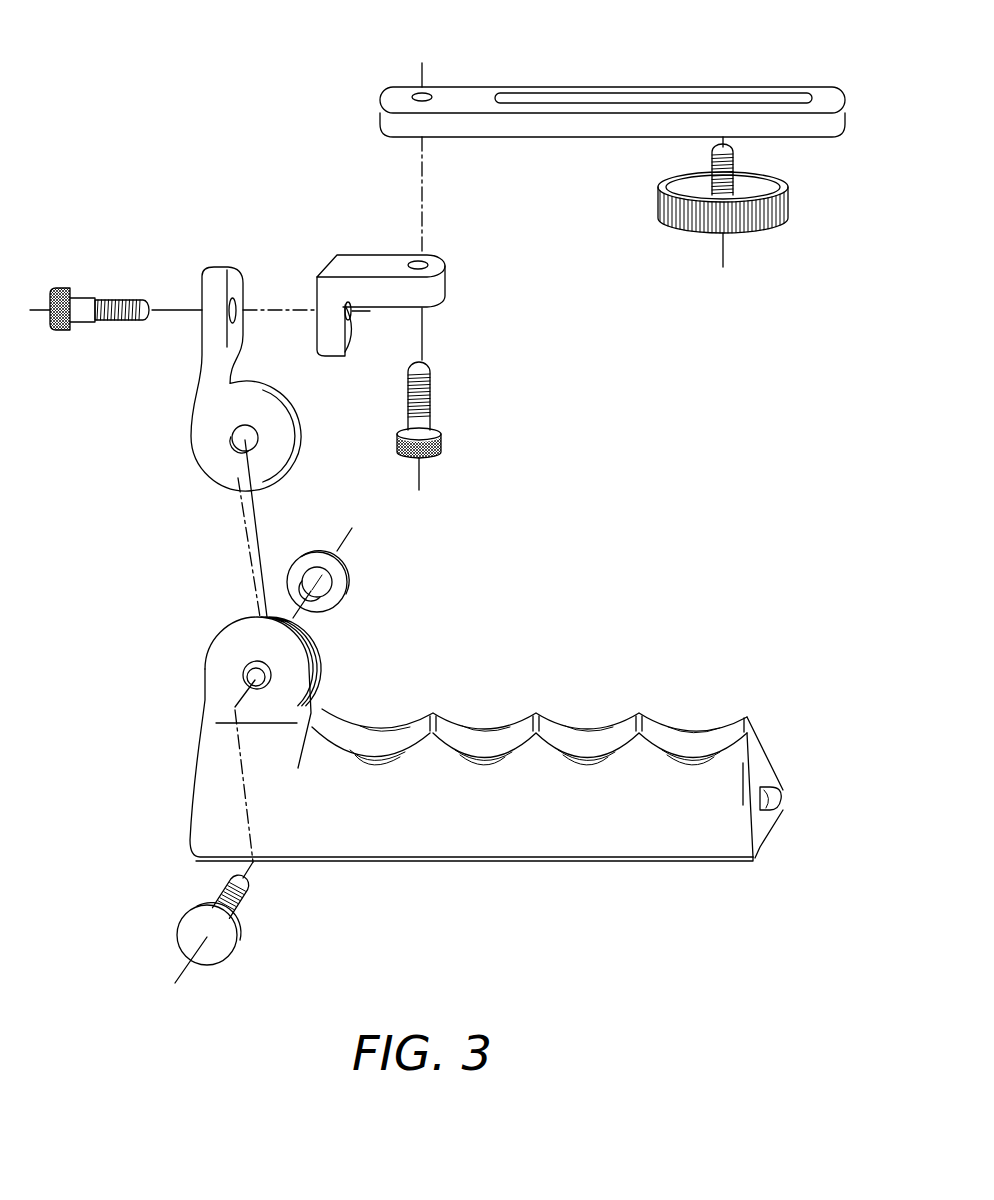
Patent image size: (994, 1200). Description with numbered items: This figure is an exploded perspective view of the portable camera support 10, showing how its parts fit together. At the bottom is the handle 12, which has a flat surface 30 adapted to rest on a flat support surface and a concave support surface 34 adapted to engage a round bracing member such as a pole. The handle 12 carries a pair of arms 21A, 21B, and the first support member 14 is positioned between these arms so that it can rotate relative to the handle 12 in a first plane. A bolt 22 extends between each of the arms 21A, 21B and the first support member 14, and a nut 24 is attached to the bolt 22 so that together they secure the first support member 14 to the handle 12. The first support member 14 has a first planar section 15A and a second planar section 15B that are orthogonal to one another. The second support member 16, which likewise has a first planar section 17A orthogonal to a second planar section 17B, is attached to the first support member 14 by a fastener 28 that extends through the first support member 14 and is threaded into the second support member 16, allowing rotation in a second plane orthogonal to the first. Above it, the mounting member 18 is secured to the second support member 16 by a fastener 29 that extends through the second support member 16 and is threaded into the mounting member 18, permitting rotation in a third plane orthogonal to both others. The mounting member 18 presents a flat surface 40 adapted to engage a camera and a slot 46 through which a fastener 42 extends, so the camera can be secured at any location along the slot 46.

The portable camera support 10 is at (156, 29).
The handle 12 is at (500, 758).
The first support member 14 is at (227, 442).
The first planar section 15A is at (215, 467).
The second planar section 15B is at (207, 328).
The second support member 16 is at (404, 306).
The first planar section 17A is at (334, 346).
The second planar section 17B is at (436, 287).
The mounting member 18 is at (820, 96).
The arm 21A is at (317, 680).
The arm 21B is at (215, 683).
The bolt 22 is at (188, 936).
The nut 24 is at (340, 580).
The fastener 28 is at (65, 333).
The fastener 29 is at (442, 445).
The flat surface 30 is at (783, 806).
The concave support surface 34 is at (783, 790).
The surface 40 is at (464, 93).
The fastener 42 is at (658, 213).
The slot 46 is at (562, 93).